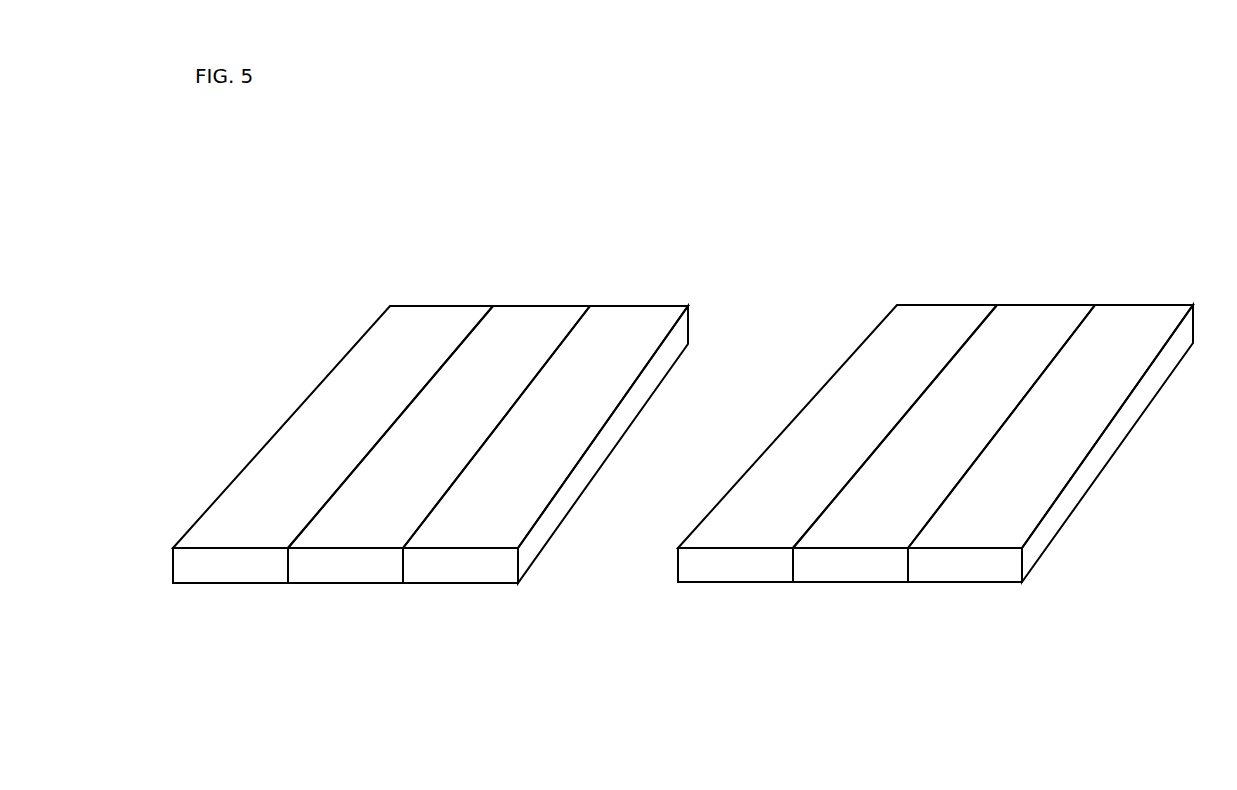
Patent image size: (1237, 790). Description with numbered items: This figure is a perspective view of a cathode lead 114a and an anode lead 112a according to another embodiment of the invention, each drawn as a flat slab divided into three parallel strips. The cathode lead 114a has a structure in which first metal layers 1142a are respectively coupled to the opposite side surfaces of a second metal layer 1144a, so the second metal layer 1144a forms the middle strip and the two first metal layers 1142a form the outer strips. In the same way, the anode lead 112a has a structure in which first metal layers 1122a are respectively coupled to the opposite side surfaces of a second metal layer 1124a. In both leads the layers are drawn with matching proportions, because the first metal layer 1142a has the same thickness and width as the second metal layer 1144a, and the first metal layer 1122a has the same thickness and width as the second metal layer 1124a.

The cathode lead 114a is at (430, 411).
The first metal layers 1142a is at (243, 517).
The second metal layer 1144a is at (371, 512).
The anode lead 112a is at (935, 416).
The first metal layers 1122a is at (751, 518).
The second metal layer 1124a is at (887, 513).